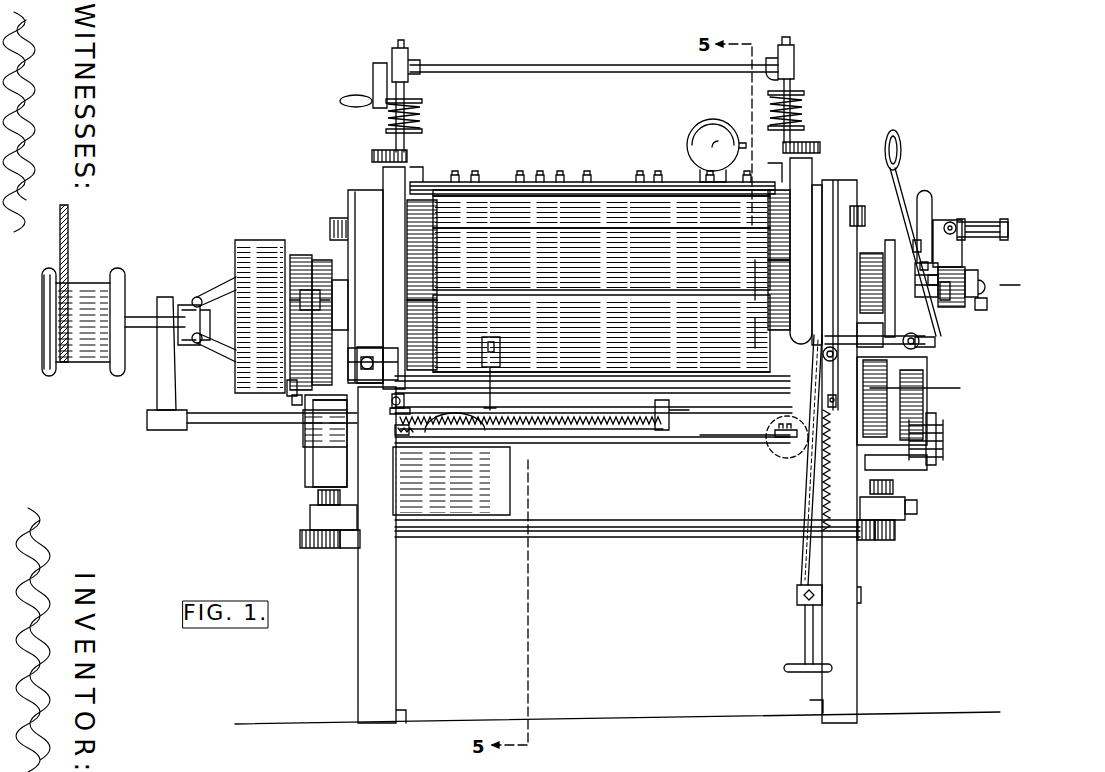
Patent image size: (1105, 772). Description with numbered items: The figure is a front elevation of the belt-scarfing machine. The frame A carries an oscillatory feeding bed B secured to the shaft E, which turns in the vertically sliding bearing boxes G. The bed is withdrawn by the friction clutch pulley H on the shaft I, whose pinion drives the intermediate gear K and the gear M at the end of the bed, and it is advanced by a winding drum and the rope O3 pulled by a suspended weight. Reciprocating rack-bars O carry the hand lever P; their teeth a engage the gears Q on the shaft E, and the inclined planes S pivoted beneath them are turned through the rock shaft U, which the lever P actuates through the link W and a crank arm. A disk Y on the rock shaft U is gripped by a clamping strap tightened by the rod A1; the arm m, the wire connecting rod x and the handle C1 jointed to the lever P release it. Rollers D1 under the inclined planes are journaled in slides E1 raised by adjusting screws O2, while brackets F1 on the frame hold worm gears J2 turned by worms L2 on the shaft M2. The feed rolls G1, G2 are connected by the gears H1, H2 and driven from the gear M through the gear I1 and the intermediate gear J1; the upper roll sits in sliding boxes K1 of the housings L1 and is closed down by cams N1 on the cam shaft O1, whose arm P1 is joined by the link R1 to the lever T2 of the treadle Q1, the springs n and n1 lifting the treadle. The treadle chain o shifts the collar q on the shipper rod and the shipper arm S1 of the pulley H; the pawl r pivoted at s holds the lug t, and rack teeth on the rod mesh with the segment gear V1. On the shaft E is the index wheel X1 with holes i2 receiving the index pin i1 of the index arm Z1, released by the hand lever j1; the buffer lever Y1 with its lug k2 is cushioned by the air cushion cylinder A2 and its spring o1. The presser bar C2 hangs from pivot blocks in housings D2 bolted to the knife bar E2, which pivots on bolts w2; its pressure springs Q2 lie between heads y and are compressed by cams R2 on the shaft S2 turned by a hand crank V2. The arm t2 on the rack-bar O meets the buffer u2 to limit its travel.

The frame A is at (389, 598).
The housings L1 is at (392, 190).
The shaft S2 is at (594, 66).
The cams R2 is at (395, 58).
The housings D2 is at (417, 113).
The pressure springs Q2 is at (392, 118).
The heads y is at (422, 101).
The handle V2 is at (362, 96).
The presser bar C2 is at (491, 180).
The upper feed roll G1 is at (491, 220).
The lower feed roll G2 is at (531, 272).
The cam shaft O1 is at (598, 190).
The gear M is at (392, 360).
The oscillatory feeding bed B is at (621, 315).
The gear H1 is at (779, 218).
The gear H2 is at (776, 266).
The gear I1 is at (412, 270).
The intermediate gear J1 is at (418, 318).
The buffer u2 is at (370, 360).
The teeth a is at (345, 348).
The inclined planes S is at (308, 393).
The spiral spring n1 is at (563, 432).
The segment gear V1 is at (452, 438).
The rock shaft U is at (510, 372).
The collar q is at (661, 432).
The pivot point s is at (392, 402).
The spring actuated pawl r is at (396, 414).
The lug t is at (400, 431).
The hand lever P is at (784, 427).
The chain o is at (738, 438).
The shaft M2 is at (611, 530).
The rope O3 is at (66, 243).
The cams N1 is at (92, 318).
The shaft I is at (140, 318).
The shipper arm S1 is at (162, 400).
The intermediate gear K is at (262, 240).
The shaft E is at (236, 272).
The gears Q is at (300, 300).
The vertically sliding bearing boxes G is at (300, 252).
The friction pulley H is at (322, 258).
The tightening pivot bolts w2 is at (340, 222).
The rack-bars O is at (290, 388).
The inwardly extending arm t2 is at (292, 400).
The rollers D1 is at (327, 428).
The adjusting screws O2 is at (318, 497).
The brackets F1 is at (312, 518).
The worm gears J2 is at (302, 538).
The knife bar E2 is at (345, 545).
The worms L2 is at (880, 540).
The arm P1 is at (824, 196).
The handle C1 is at (893, 150).
The sliding boxes K1 is at (914, 268).
The buffer lever Y1 is at (894, 245).
The index arm Z1 is at (955, 230).
The hand lever j1 is at (1006, 222).
The index wheel X1 is at (980, 304).
The link W is at (985, 290).
The wire connecting rod x is at (962, 272).
The spring actuated index pin i1 is at (922, 243).
The lug k2 is at (925, 265).
The holes i2 is at (935, 278).
The rod A1 is at (920, 340).
The arm m is at (930, 345).
The disk Y is at (925, 390).
The air cushion cylinder A2 is at (943, 436).
The spring o1 is at (928, 460).
The slides E1 is at (917, 505).
The spiral spring n is at (838, 514).
The link R1 is at (802, 500).
The lever T2 is at (814, 582).
The treadle Q1 is at (790, 666).